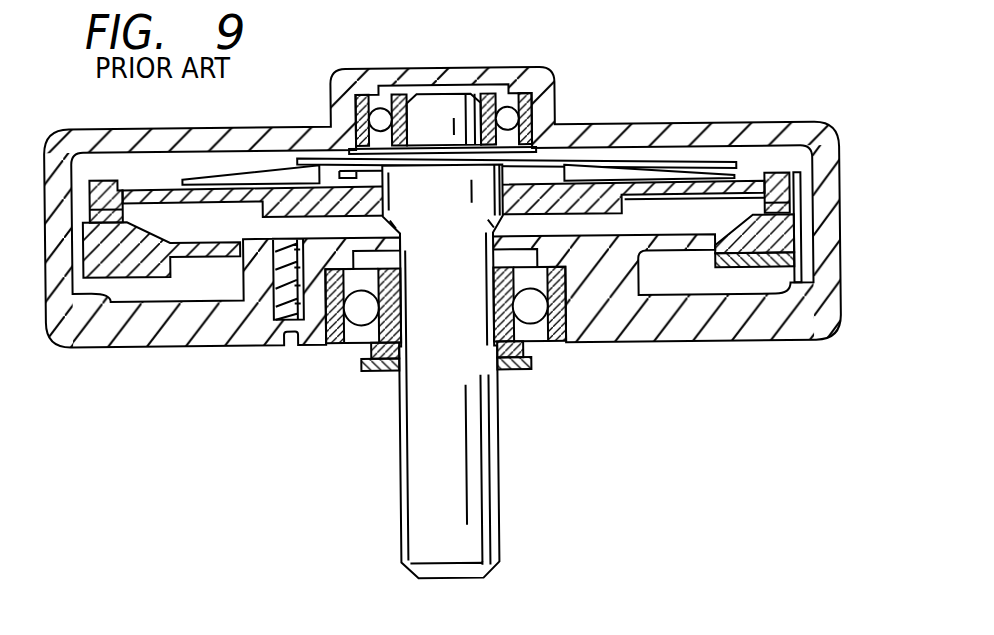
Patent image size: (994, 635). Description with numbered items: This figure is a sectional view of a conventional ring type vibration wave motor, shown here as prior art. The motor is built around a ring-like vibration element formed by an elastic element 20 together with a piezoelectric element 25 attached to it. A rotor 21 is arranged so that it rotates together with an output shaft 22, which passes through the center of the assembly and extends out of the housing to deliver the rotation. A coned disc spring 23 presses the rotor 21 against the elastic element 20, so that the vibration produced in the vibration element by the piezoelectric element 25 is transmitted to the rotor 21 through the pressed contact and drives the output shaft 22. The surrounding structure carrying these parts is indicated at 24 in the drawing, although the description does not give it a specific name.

The elastic element 20 is at (843, 242).
The rotor 21 is at (797, 177).
The output shaft 22 is at (498, 490).
The coned disc spring 23 is at (630, 164).
The cover 24 is at (713, 126).
The piezoelectric element 25 is at (760, 272).